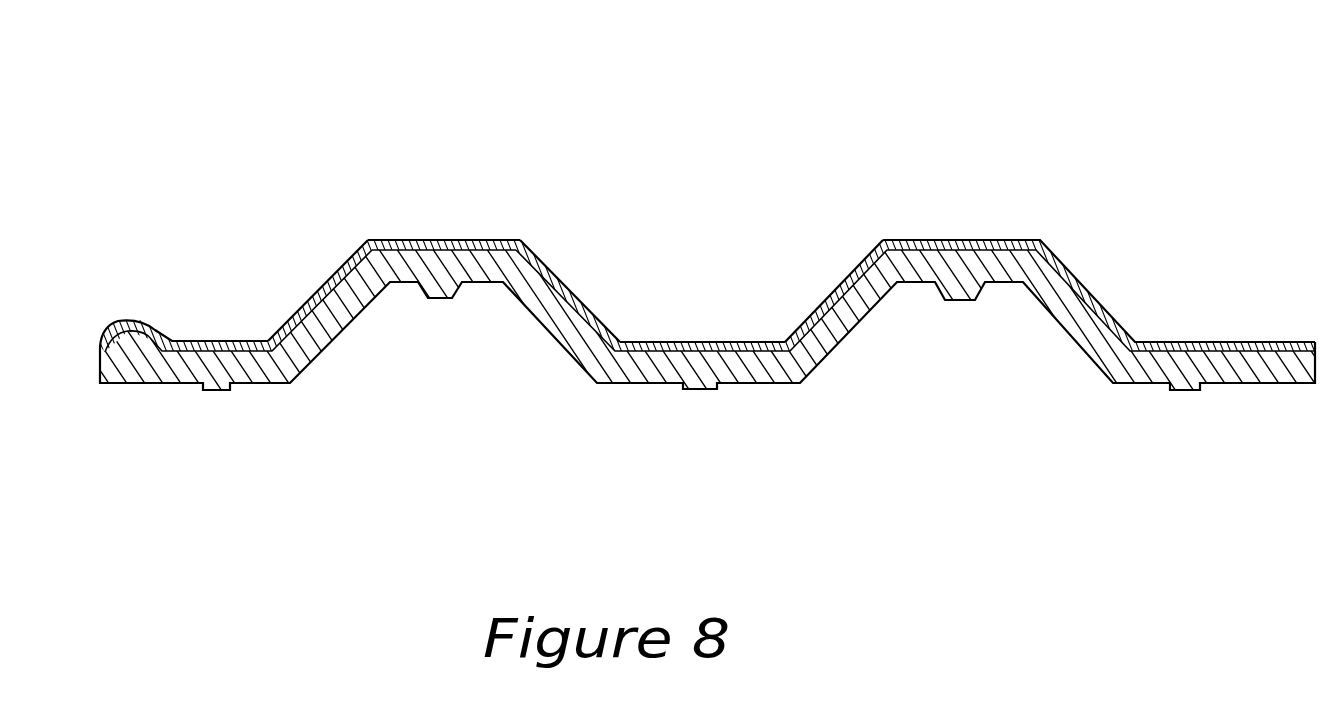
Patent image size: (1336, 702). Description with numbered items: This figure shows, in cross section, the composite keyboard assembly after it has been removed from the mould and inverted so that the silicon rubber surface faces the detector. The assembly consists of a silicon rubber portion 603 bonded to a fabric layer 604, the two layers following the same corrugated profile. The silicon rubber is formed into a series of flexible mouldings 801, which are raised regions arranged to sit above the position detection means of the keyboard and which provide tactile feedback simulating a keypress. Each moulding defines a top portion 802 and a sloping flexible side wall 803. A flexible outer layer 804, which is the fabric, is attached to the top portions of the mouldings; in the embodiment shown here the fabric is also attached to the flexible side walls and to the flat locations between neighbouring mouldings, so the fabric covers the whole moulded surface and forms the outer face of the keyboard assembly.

The flexible mouldings 801 is at (849, 214).
The top portion 802 is at (423, 210).
The flexible side wall 803 is at (302, 266).
The flexible outer layer 804 is at (490, 240).
The silicon rubber portion 603 is at (1287, 373).
The fabric layer 604 is at (1218, 343).